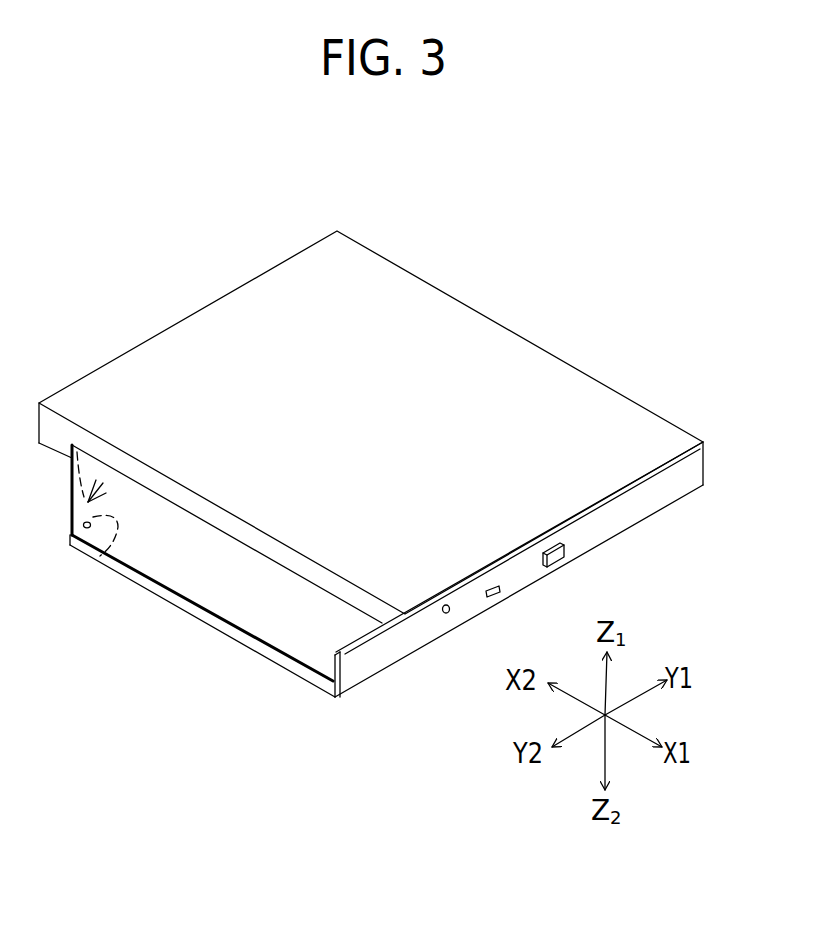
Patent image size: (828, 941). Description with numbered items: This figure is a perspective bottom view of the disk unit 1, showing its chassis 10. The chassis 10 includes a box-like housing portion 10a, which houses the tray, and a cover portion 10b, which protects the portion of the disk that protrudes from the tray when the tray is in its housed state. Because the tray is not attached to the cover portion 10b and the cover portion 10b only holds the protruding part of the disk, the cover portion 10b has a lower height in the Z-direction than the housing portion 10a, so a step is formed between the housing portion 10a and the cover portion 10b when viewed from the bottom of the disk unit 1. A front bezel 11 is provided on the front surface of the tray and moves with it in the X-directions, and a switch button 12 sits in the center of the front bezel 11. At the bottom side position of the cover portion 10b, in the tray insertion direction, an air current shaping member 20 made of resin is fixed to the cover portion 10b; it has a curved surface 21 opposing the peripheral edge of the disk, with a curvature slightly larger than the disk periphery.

The disk unit 1 is at (453, 198).
The chassis 10 is at (521, 330).
The housing portion 10a is at (542, 385).
The cover portion 10b is at (218, 583).
The front bezel 11 is at (647, 503).
The switch button 12 is at (565, 555).
The air current shaping member 20 is at (92, 498).
The curved surface 21 is at (100, 556).